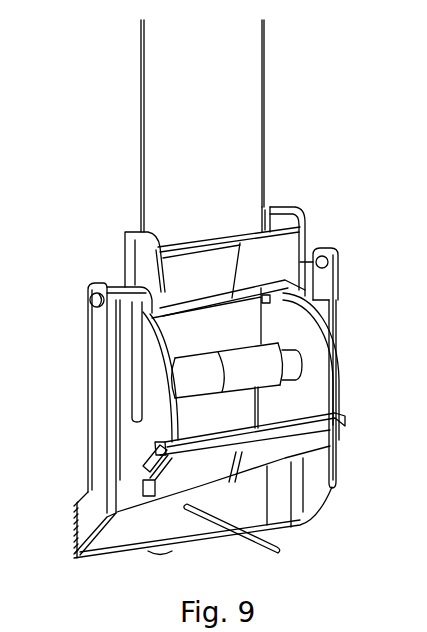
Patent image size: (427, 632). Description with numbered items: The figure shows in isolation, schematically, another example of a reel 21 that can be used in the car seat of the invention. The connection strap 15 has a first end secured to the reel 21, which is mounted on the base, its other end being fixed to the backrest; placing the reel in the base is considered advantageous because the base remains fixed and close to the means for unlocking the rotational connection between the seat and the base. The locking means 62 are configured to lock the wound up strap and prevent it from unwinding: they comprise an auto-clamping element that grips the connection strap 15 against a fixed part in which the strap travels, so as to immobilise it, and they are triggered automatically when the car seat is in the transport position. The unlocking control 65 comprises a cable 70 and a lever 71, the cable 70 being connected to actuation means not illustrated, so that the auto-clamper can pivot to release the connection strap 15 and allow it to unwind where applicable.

The connection strap 15 is at (243, 79).
The locking means 62 is at (292, 246).
The unlocking control 65 is at (103, 332).
The reel 21 is at (155, 423).
The cable 70 is at (282, 550).
The lever 71 is at (128, 533).